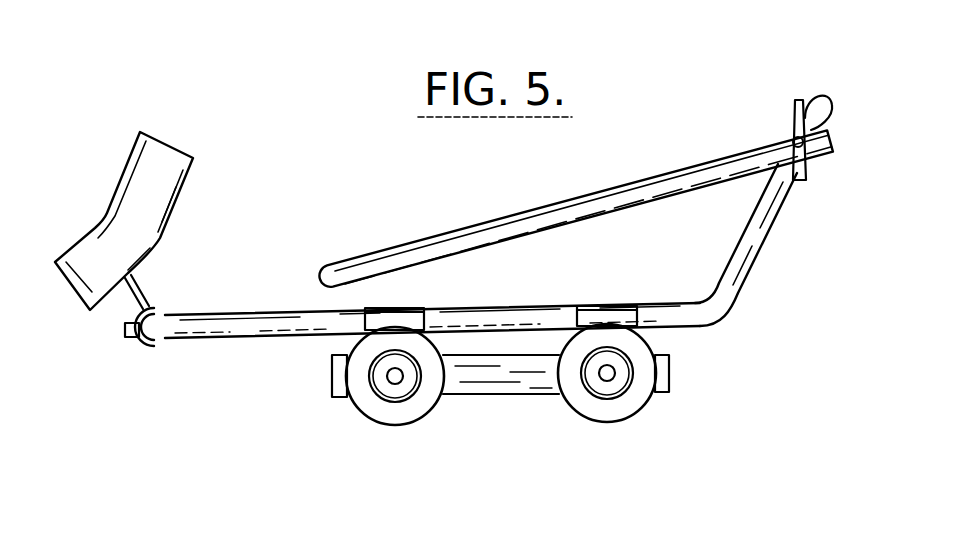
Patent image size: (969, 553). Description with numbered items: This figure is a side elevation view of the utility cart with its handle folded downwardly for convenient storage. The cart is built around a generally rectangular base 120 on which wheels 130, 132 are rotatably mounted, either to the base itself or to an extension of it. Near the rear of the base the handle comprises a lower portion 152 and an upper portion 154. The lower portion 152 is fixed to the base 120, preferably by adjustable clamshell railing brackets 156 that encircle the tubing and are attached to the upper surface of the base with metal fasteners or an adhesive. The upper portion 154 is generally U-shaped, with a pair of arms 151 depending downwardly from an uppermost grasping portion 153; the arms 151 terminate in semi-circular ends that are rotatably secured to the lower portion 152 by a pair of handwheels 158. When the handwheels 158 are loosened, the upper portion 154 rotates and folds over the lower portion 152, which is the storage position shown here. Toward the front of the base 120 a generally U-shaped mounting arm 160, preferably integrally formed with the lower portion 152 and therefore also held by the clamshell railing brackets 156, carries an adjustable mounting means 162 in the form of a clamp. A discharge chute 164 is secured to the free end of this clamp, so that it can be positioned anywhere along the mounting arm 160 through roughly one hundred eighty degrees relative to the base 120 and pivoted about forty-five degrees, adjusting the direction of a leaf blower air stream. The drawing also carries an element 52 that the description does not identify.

The frame tube 52 is at (432, 326).
The base 120 is at (522, 394).
The wheel 130 is at (605, 423).
The wheel 132 is at (393, 426).
The arms 151 is at (575, 195).
The lower portion 152 is at (748, 262).
The grasping portion 153 is at (335, 263).
The upper portion 154 is at (522, 234).
The clamshell railing brackets 156 is at (384, 308).
The handwheels 158 is at (797, 102).
The mounting arm 160 is at (200, 315).
The adjustable mounting means 162 is at (131, 339).
The discharge chute 164 is at (125, 170).